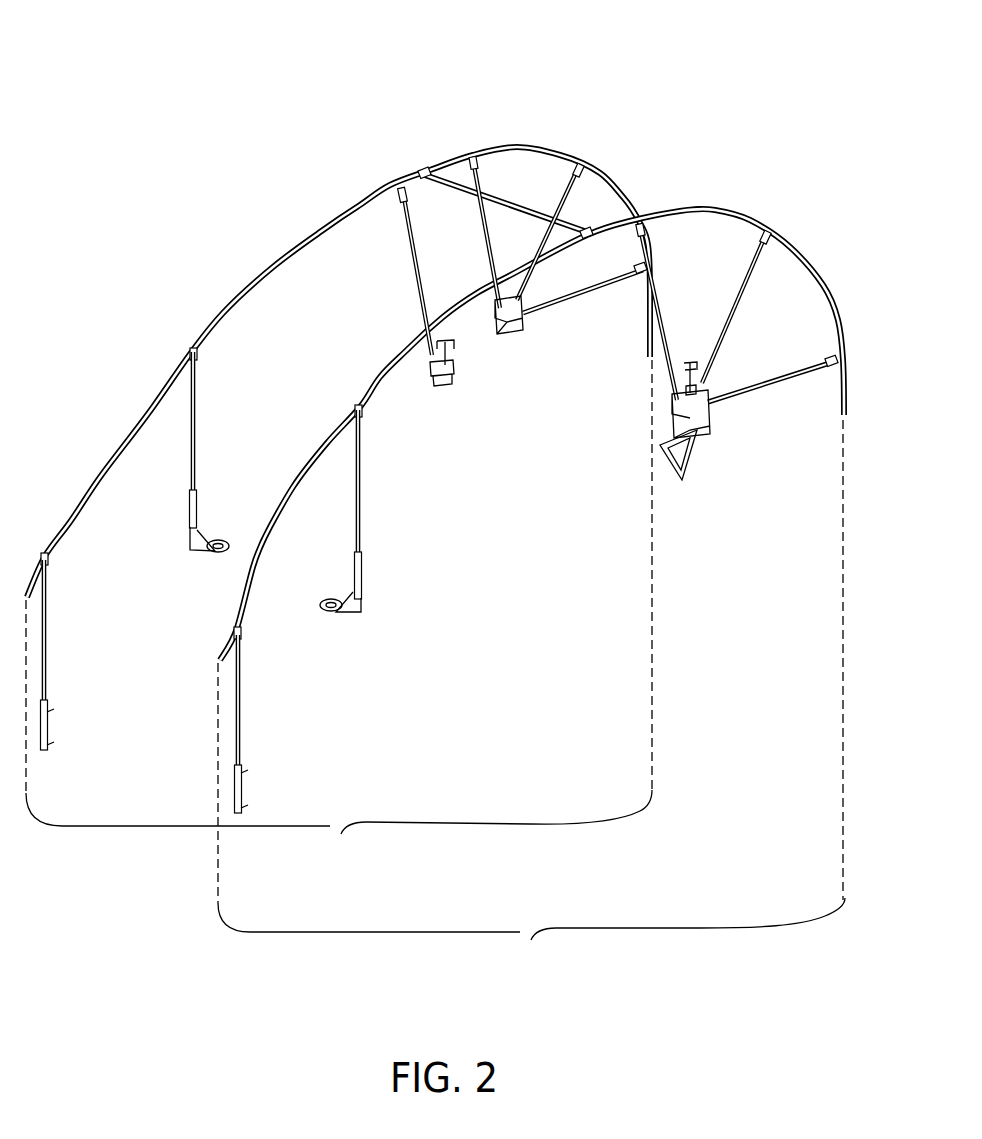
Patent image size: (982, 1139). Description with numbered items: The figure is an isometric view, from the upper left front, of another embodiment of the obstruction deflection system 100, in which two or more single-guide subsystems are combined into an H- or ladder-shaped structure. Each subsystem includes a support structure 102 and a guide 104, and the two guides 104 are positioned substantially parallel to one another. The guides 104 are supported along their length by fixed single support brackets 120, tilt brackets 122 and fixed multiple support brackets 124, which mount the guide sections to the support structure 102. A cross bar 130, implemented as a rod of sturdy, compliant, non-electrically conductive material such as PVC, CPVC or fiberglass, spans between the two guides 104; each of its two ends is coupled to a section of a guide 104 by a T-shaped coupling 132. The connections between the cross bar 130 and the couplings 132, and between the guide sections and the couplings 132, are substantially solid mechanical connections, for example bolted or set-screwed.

The obstruction deflection system 100 is at (233, 128).
The support structure 102 is at (330, 826).
The guide 104 is at (273, 267).
The fixed single support bracket 120 is at (192, 508).
The tilt bracket 122 is at (456, 367).
The fixed multiple support bracket 124 is at (493, 320).
The cross bar 130 is at (495, 196).
The T-shaped coupling 132 is at (420, 172).